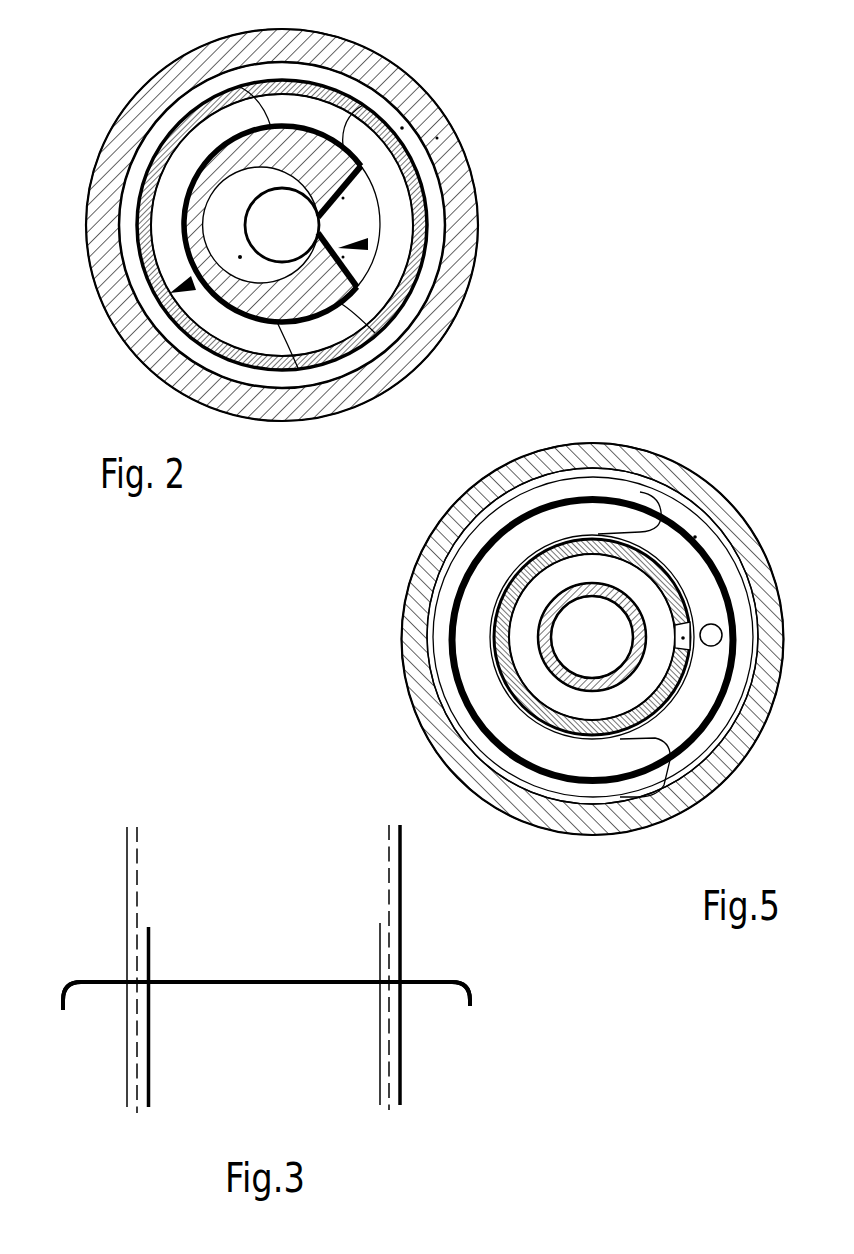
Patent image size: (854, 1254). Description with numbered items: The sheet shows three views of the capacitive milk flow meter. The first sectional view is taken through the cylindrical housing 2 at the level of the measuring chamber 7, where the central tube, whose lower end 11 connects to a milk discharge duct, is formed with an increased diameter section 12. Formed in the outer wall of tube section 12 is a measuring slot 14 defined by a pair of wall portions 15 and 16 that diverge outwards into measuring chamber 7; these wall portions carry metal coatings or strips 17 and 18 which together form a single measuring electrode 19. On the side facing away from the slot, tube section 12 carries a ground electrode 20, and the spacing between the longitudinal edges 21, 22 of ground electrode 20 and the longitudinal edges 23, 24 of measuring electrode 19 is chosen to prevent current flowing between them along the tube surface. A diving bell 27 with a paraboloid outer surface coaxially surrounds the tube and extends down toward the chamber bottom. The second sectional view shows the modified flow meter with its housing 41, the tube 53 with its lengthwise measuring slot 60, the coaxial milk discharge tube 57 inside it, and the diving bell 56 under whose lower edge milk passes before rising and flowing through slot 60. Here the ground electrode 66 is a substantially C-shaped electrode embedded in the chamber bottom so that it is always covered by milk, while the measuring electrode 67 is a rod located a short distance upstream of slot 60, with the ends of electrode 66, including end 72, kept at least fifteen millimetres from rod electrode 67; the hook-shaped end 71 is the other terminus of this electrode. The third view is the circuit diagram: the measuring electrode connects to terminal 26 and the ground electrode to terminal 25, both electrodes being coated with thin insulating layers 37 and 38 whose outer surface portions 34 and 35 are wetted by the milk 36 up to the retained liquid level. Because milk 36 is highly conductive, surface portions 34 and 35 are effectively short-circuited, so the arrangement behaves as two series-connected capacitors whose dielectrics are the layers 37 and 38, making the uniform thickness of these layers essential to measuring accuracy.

In FIG. 2, the housing 2 is at (437, 138).
In FIG. 2, the measuring chamber 7 is at (402, 128).
In FIG. 2, the lower end of tube 11 is at (400, 383).
In FIG. 2, the increased diameter section 12 is at (240, 257).
In FIG. 2, the measuring slot 14 is at (320, 225).
In FIG. 2, the wall portion 15 is at (355, 182).
In FIG. 2, the wall portion 16 is at (350, 270).
In FIG. 2, the metal strip 17 is at (343, 198).
In FIG. 2, the metal strip 18 is at (343, 257).
In FIG. 2, the measuring electrode 19 is at (370, 244).
In FIG. 3, the measuring electrode 19 is at (402, 1078).
In FIG. 2, the ground electrode 20 is at (170, 293).
In FIG. 3, the ground electrode 20 is at (128, 1095).
In FIG. 2, the longitudinal edge of ground electrode 21 is at (240, 87).
In FIG. 2, the longitudinal edge of ground electrode 22 is at (298, 368).
In FIG. 2, the longitudinal edge of measuring electrode 23 is at (363, 105).
In FIG. 2, the longitudinal edge of measuring electrode 24 is at (375, 333).
In FIG. 2, the diving bell 27 is at (172, 127).
In FIG. 5, the housing 41 is at (697, 495).
In FIG. 5, the tube 53 is at (677, 703).
In FIG. 5, the diving bell 56 is at (695, 537).
In FIG. 5, the milk discharge tube 57 is at (590, 692).
In FIG. 5, the measuring slot 60 is at (683, 638).
In FIG. 5, the ground electrode 66 is at (521, 773).
In FIG. 5, the measuring electrode 67 is at (718, 627).
In FIG. 5, the hook end 71 is at (674, 512).
In FIG. 5, the end of ground electrode 72 is at (670, 752).
In FIG. 3, the terminal 25 is at (64, 1018).
In FIG. 3, the terminal 26 is at (471, 1013).
In FIG. 3, the surface portion 34 is at (150, 1045).
In FIG. 3, the surface portion 35 is at (380, 1037).
In FIG. 3, the milk 36 is at (262, 980).
In FIG. 3, the insulating layer 37 is at (138, 1115).
In FIG. 3, the insulating layer 38 is at (392, 1112).